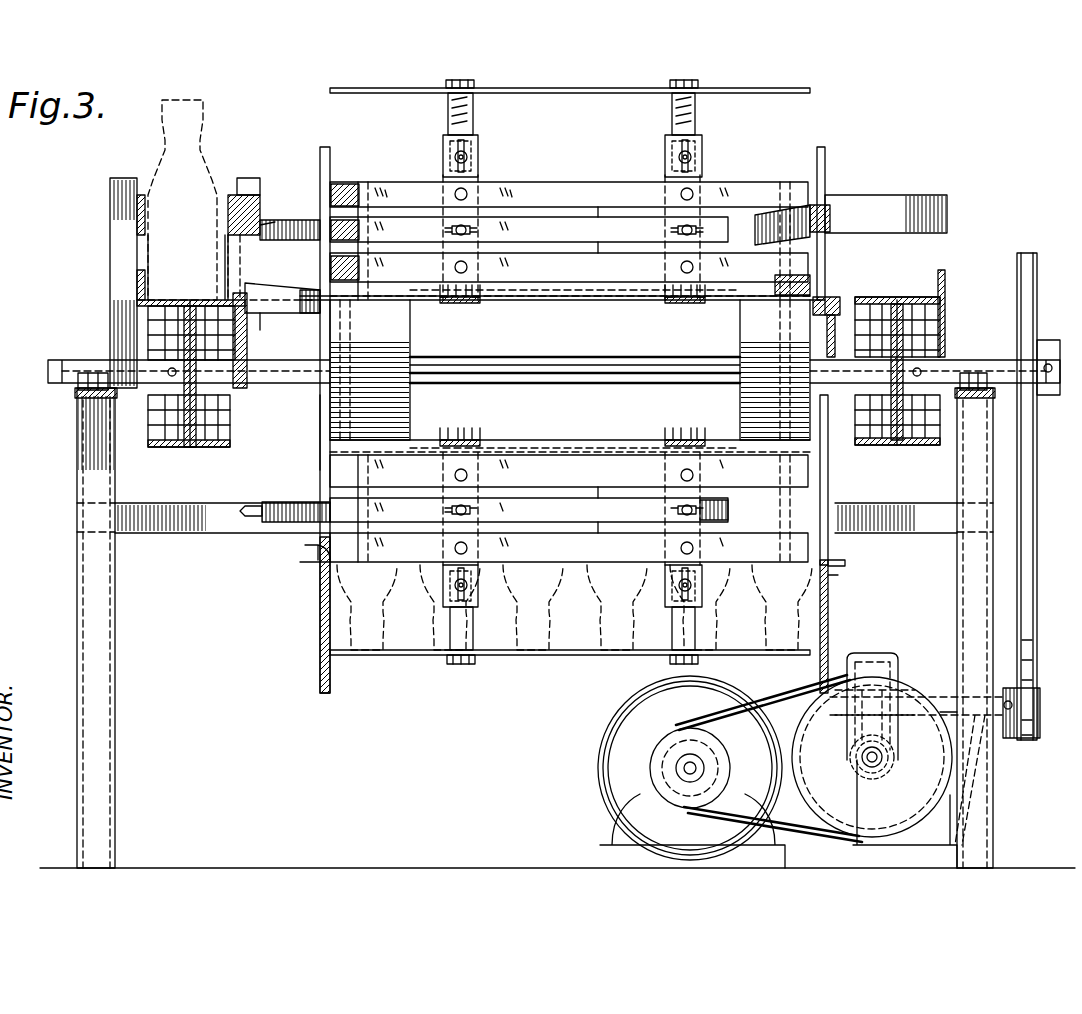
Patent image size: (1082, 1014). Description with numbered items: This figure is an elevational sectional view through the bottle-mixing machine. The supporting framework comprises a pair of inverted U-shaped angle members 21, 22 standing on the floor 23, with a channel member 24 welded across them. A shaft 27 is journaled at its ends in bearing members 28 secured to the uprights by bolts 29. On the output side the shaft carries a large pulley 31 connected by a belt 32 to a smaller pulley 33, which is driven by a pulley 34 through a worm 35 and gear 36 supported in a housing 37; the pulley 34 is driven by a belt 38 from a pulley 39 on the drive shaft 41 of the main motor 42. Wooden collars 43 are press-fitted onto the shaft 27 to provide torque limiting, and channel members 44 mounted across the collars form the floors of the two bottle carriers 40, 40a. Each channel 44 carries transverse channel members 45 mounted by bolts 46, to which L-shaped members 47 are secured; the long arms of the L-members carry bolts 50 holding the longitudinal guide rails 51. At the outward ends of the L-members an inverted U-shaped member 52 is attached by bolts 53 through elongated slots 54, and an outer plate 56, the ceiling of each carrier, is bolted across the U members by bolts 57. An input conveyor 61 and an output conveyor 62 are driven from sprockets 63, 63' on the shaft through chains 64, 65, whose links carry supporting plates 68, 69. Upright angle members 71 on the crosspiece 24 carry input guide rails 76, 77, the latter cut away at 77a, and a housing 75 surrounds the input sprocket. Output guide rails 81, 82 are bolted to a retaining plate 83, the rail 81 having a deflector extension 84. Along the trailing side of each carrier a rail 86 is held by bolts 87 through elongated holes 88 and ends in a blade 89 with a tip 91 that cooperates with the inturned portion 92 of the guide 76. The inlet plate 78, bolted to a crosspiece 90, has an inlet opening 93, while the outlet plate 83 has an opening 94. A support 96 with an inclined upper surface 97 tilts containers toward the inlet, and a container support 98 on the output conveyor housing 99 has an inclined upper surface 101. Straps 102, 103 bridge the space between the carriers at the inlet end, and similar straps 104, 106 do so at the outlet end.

The inverted U-shaped angle member 21 is at (957, 602).
The inverted U-shaped angle member 22 is at (115, 630).
The floor 23 is at (514, 868).
The channel member 24 is at (925, 535).
The shaft 27 is at (560, 380).
The bearing member 28 is at (75, 373).
The bolt 29 is at (96, 373).
The large pulley 31 is at (1017, 268).
The belt 32 is at (1037, 598).
The pulley 33 is at (1037, 690).
The pulley 34 is at (905, 815).
The worm 35 is at (862, 768).
The gear 36 is at (850, 748).
The housing 37 is at (875, 653).
The belt 38 is at (798, 700).
The pulley 39 is at (690, 740).
The bottle carrier 40 is at (744, 178).
The bottle carrier 40a is at (519, 672).
The drive shaft 41 is at (676, 768).
The main motor 42 is at (660, 690).
The collar 43 is at (410, 345).
The channel member 44 is at (598, 300).
The channel member 45 is at (480, 300).
The bolt 46 is at (458, 300).
The L-shaped member 47 is at (478, 150).
The bolt 50 is at (455, 194).
The guide rail 51 is at (558, 182).
The inverted U-shaped member 52 is at (473, 100).
The bolt 53 is at (467, 157).
The elongated slot 54 is at (466, 142).
The outer plate 56 is at (768, 93).
The bolt 57 is at (446, 96).
The input conveyor 61 is at (181, 460).
The output conveyor 62 is at (932, 458).
The sprocket 63 is at (203, 386).
The sprocket 63' is at (909, 386).
The chain 64 is at (230, 422).
The chain 65 is at (858, 420).
The plate 68 is at (190, 300).
The plate 69 is at (880, 297).
The angle member 71 is at (240, 178).
The housing 75 is at (247, 333).
The guide rail 76 is at (137, 205).
The guide rail 77 is at (228, 212).
The cut-away 77a is at (228, 240).
The end plate 78 is at (320, 410).
The guide rail 81 is at (830, 215).
The guide rail 82 is at (947, 215).
The retaining plate 83 is at (828, 478).
The deflector extension 84 is at (760, 240).
The rail 86 is at (598, 218).
The bolt 87 is at (470, 230).
The elongated bolt hole 88 is at (445, 230).
The blade 89 is at (270, 242).
The crosspiece 90 is at (305, 548).
The tip 91 is at (275, 222).
The inturned portion 92 is at (290, 313).
The inlet opening 93 is at (320, 172).
The opening 94 is at (825, 172).
The support 96 is at (300, 285).
The upper surface 97 is at (278, 290).
The container support 98 is at (840, 297).
The output conveyor housing 99 is at (827, 320).
The upper surface 101 is at (830, 297).
The strap 102 is at (345, 205).
The strap 103 is at (355, 288).
The strap 104 is at (728, 500).
The strap 106 is at (775, 290).